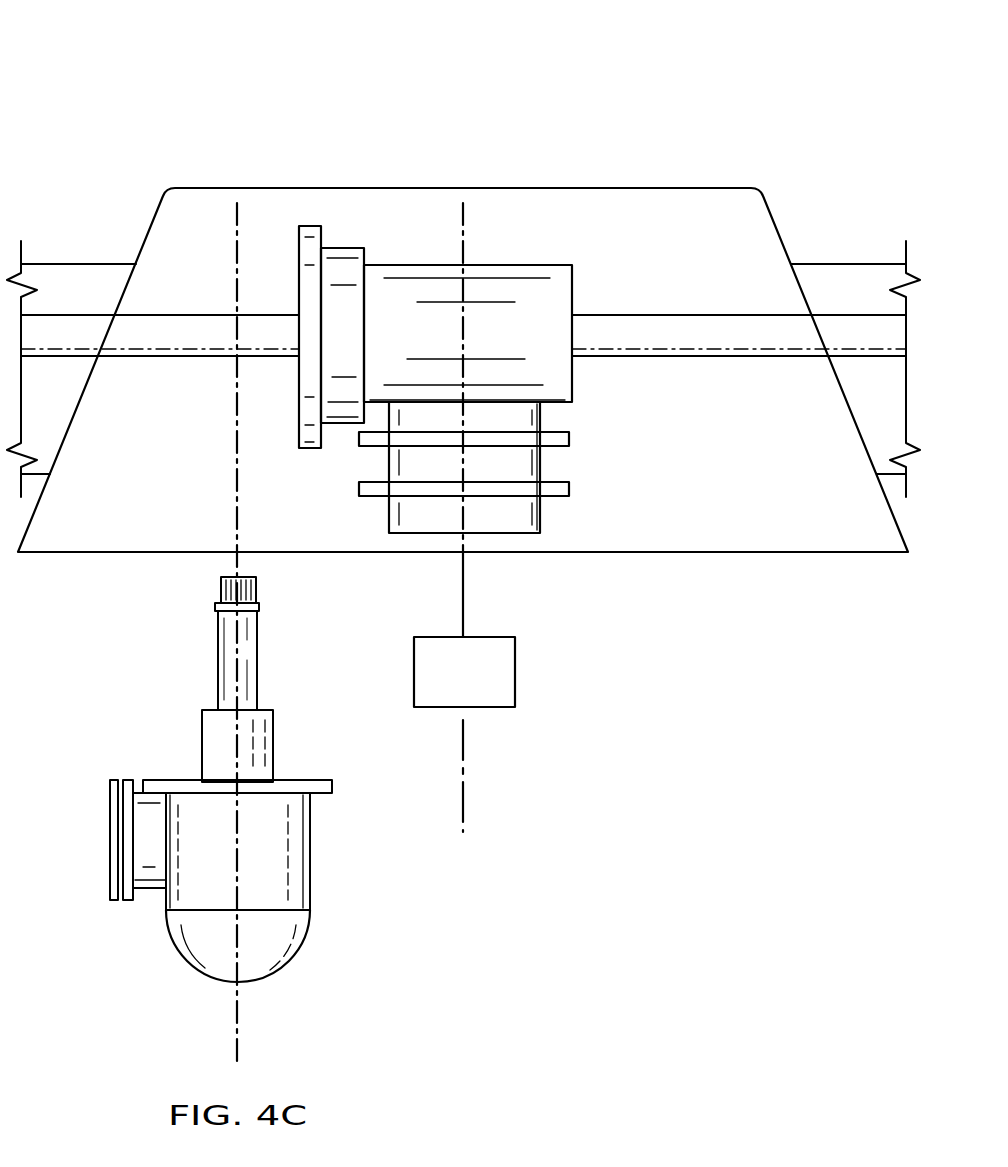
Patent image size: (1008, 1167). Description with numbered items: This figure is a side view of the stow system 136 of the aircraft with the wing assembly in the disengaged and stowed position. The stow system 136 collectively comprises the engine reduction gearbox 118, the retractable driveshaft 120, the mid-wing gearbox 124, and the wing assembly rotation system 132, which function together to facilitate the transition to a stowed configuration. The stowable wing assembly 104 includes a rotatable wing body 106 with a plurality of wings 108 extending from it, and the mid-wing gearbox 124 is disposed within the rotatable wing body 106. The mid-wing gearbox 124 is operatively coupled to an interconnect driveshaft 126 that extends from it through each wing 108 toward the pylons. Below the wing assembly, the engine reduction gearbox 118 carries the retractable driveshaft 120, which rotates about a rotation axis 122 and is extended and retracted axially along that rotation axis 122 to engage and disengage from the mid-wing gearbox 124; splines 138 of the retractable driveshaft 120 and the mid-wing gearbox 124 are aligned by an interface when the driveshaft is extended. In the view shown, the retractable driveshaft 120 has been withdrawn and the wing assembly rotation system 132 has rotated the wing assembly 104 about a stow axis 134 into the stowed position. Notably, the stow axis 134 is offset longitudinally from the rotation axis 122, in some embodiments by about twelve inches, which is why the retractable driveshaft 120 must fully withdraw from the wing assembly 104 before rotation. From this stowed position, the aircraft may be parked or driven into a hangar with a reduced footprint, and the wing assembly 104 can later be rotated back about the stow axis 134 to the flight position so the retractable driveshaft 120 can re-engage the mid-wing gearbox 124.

The stow system 136 is at (208, 60).
The stowable wing assembly 104 is at (702, 180).
The rotatable wing body 106 is at (556, 187).
The wings 108 is at (82, 263).
The interconnect driveshaft 126 is at (198, 313).
The mid-wing gearbox 124 is at (521, 264).
The stow axis 134 is at (464, 818).
The wing assembly rotation system 132 is at (516, 673).
The rotation axis 122 is at (238, 1047).
The splines 138 is at (257, 592).
The retractable driveshaft 120 is at (257, 660).
The engine reduction gearbox 118 is at (310, 850).